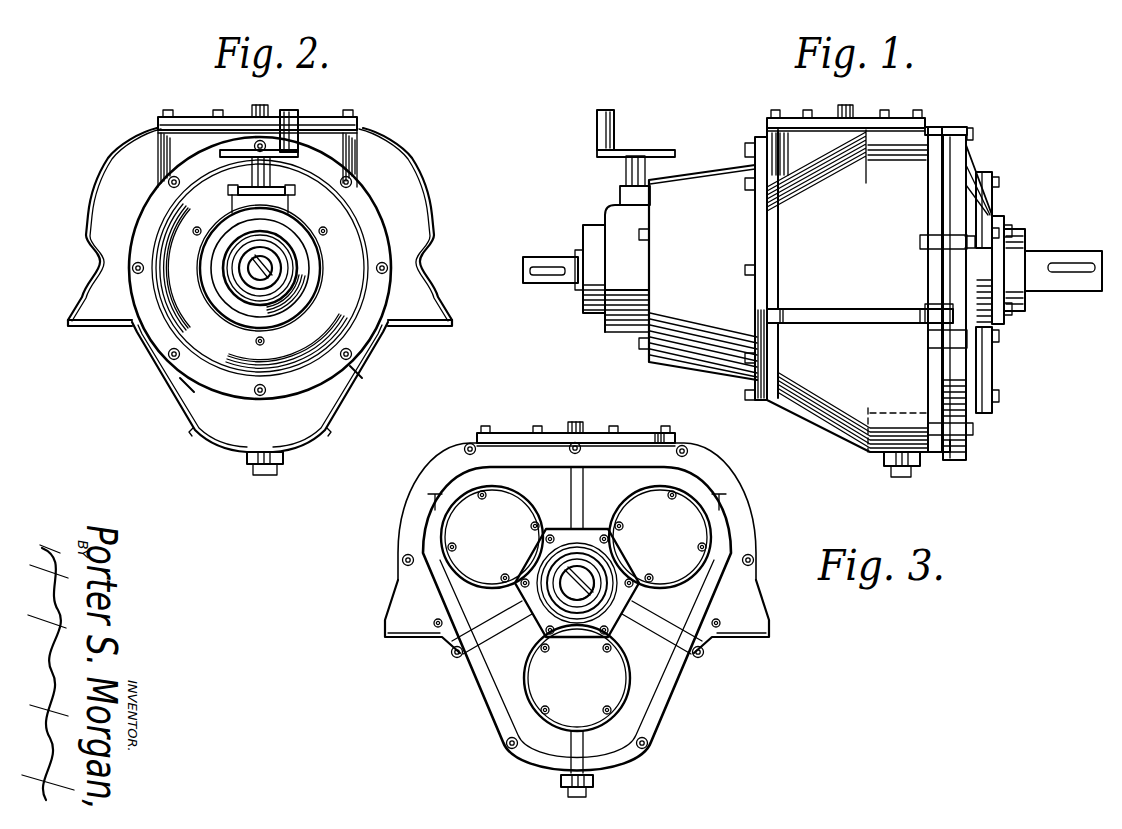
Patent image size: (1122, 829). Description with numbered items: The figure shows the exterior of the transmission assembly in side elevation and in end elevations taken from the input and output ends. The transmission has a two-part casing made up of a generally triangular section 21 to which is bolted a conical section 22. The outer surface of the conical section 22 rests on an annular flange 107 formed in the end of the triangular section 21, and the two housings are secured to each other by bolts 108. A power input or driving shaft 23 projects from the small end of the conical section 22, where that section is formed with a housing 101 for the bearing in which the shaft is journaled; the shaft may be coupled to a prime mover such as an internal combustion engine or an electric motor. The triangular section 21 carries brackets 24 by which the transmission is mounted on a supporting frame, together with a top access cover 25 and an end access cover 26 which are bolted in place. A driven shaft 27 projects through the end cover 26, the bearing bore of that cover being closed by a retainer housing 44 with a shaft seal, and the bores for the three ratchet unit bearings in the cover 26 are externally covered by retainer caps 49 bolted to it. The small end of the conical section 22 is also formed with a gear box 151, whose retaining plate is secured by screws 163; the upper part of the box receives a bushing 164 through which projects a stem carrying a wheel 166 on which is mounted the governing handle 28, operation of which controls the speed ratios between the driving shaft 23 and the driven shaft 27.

In FIG. 2, the triangular casing section 21 is at (108, 220).
In FIG. 1, the triangular casing section 21 is at (847, 302).
In FIG. 2, the conical casing section 22 is at (215, 292).
In FIG. 1, the conical casing section 22 is at (681, 272).
In FIG. 2, the driving shaft 23 is at (273, 280).
In FIG. 1, the driving shaft 23 is at (545, 257).
In FIG. 2, the brackets 24 is at (86, 327).
In FIG. 1, the brackets 24 is at (872, 324).
In FIG. 3, the brackets 24 is at (410, 640).
In FIG. 2, the top access cover 25 is at (197, 125).
In FIG. 1, the top access cover 25 is at (793, 120).
In FIG. 3, the top access cover 25 is at (508, 437).
In FIG. 1, the end access cover 26 is at (963, 127).
In FIG. 3, the end access cover 26 is at (626, 455).
In FIG. 1, the driven shaft 27 is at (1062, 254).
In FIG. 3, the driven shaft 27 is at (590, 577).
In FIG. 2, the governing handle 28 is at (300, 118).
In FIG. 1, the governing handle 28 is at (612, 118).
In FIG. 1, the retainer housing 44 is at (1022, 306).
In FIG. 3, the retainer housing 44 is at (545, 598).
In FIG. 1, the retainer caps 49 is at (988, 198).
In FIG. 3, the retainer caps 49 is at (576, 608).
In FIG. 2, the bearing housing 101 is at (220, 272).
In FIG. 1, the bearing housing 101 is at (582, 305).
In FIG. 2, the annular flange 107 is at (187, 385).
In FIG. 1, the annular flange 107 is at (772, 402).
In FIG. 2, the bolts 108 is at (356, 376).
In FIG. 1, the bolts 108 is at (752, 365).
In FIG. 2, the gear box 151 is at (333, 290).
In FIG. 1, the gear box 151 is at (613, 333).
In FIG. 2, the screws 163 is at (197, 231).
In FIG. 1, the screws 163 is at (649, 320).
In FIG. 2, the bushing 164 is at (285, 192).
In FIG. 1, the bushing 164 is at (625, 184).
In FIG. 2, the wheel 166 is at (236, 153).
In FIG. 1, the wheel 166 is at (597, 153).